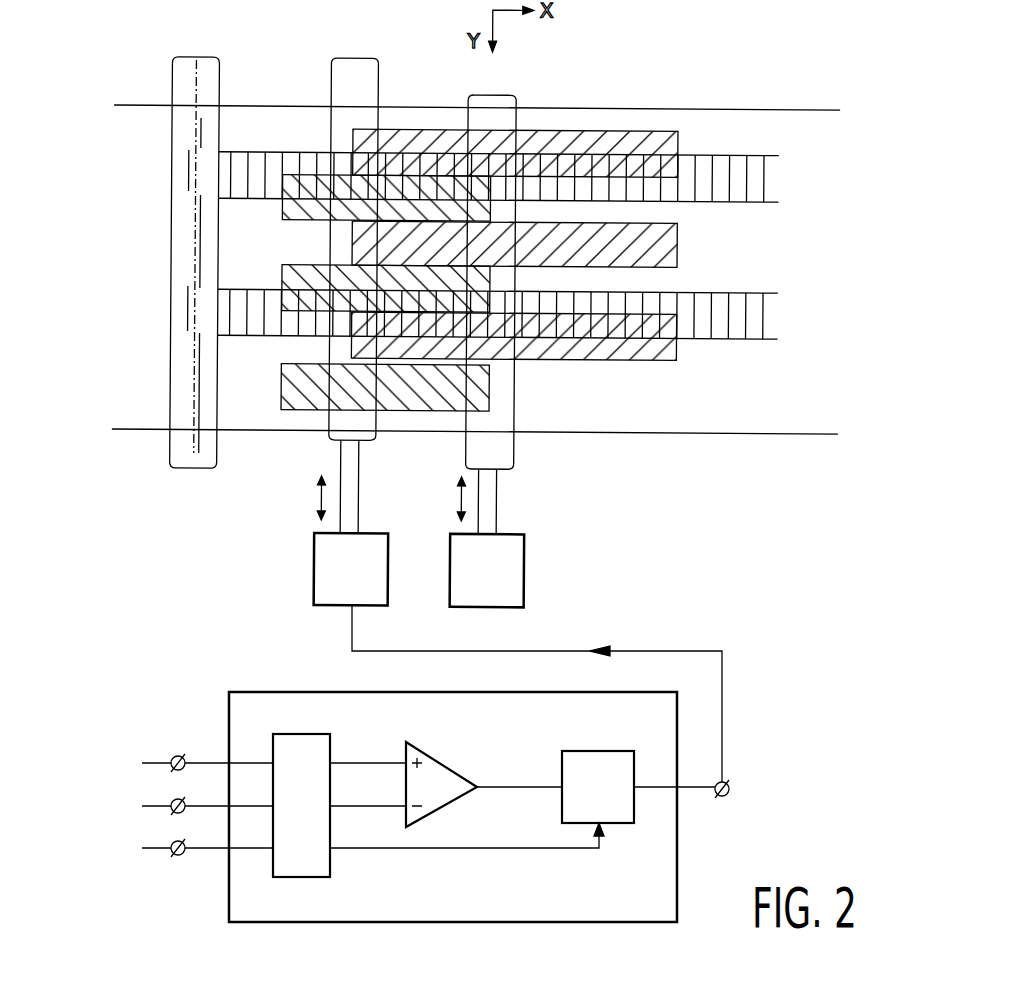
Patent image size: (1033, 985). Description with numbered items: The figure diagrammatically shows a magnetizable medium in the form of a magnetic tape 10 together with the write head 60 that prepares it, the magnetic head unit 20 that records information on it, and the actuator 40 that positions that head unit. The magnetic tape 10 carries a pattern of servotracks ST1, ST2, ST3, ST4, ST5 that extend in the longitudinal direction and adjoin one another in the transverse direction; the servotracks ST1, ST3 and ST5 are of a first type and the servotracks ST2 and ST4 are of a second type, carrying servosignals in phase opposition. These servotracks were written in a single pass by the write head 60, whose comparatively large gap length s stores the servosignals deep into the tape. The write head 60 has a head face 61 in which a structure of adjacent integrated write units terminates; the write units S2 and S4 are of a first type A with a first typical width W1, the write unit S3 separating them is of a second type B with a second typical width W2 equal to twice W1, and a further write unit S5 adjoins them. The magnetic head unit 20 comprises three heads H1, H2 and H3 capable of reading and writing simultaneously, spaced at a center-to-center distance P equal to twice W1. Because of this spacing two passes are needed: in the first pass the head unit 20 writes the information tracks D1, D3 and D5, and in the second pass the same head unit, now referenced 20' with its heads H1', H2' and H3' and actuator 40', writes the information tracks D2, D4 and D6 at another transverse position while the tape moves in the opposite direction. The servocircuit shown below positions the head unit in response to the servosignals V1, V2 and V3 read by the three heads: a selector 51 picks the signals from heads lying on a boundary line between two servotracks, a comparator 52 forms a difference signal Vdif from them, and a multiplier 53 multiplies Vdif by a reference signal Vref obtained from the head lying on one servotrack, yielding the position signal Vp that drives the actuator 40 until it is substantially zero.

The magnetic tape 10 is at (802, 110).
The magnetic head unit 20 is at (353, 272).
The magnetic head unit in second pass 20' is at (473, 302).
The actuator 40 is at (322, 541).
The actuator in second pass 40' is at (525, 542).
The selector 51 is at (300, 734).
The comparator 52 is at (445, 760).
The multiplier 53 is at (596, 750).
The write head 60 is at (166, 240).
The head face 61 is at (171, 88).
The information track D1 is at (553, 133).
The information track D2 is at (192, 116).
The information track D3 is at (600, 254).
The information track D4 is at (282, 312).
The information track D5 is at (557, 347).
The information track D6 is at (282, 365).
The magnetic write head H1 is at (322, 105).
The magnetic write head in second pass H1' is at (533, 136).
The magnetic write head H2 is at (319, 246).
The magnetic write head in second pass H2' is at (547, 246).
The magnetic write head H3 is at (312, 407).
The magnetic write head in second pass H3' is at (548, 431).
The write unit S2 is at (187, 167).
The write unit S3 is at (193, 240).
The write unit S4 is at (187, 310).
The write unit S5 is at (193, 384).
The servotrack ST1 is at (685, 112).
The servotrack ST2 is at (685, 157).
The servotrack ST3 is at (685, 205).
The servotrack ST4 is at (685, 293).
The servotrack ST5 is at (685, 345).
The first typical width W1 is at (803, 180).
The second typical width W2 is at (803, 250).
The center-to-center distance P is at (864, 206).
The gap length s is at (173, 70).
The first type of write unit A is at (110, 152).
The second type of write unit B is at (110, 200).
The servosignal V1 is at (258, 766).
The servosignal V2 is at (357, 844).
The servosignal V3 is at (258, 809).
The difference signal Vdif is at (515, 777).
The reference signal Vref is at (480, 853).
The position signal Vp is at (729, 789).